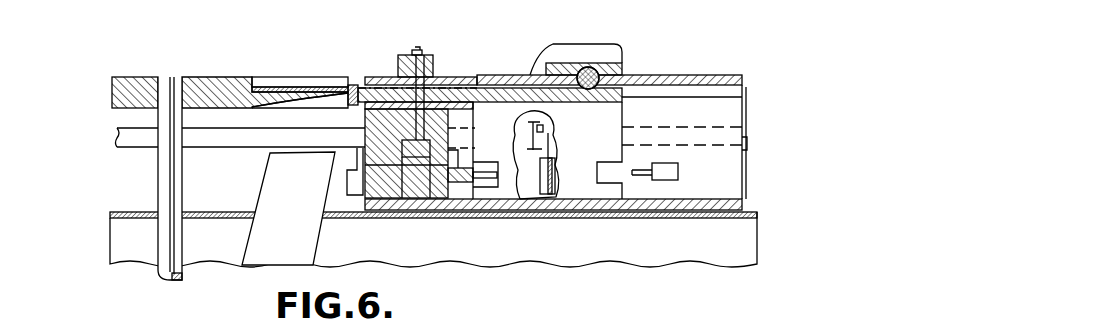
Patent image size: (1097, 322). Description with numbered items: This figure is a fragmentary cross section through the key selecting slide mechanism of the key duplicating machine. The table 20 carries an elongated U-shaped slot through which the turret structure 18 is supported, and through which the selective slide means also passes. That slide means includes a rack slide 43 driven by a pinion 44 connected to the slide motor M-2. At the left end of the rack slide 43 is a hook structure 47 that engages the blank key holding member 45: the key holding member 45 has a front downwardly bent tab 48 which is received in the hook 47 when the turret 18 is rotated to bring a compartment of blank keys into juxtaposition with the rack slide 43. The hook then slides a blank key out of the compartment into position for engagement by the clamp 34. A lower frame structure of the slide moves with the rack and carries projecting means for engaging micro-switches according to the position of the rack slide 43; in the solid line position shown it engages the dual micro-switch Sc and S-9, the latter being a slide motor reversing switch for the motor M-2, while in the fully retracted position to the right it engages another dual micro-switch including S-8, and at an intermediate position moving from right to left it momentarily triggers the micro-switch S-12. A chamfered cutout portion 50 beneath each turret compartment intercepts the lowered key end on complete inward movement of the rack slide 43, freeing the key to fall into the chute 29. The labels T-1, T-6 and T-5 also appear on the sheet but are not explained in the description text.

The turret structure 18 is at (196, 77).
The table 20 is at (147, 135).
The thermostat strip T-1 is at (265, 87).
The blank key holding member 45 is at (268, 108).
The chamfered cutout portion 50 is at (268, 108).
The front downwardly bent tab 48 is at (352, 90).
The hook structure 47 is at (352, 105).
The chute 29 is at (302, 241).
The clamp 34 is at (432, 60).
The rack slide 43 is at (450, 77).
The slide motor M-2 is at (580, 53).
The pinion 44 is at (623, 62).
The micro-switch S-8 is at (764, 112).
The slide motor reversing switch S-9 is at (680, 168).
The micro-switch Sc is at (463, 182).
The micro-switch S-12 is at (553, 194).
The thermostat T-6 is at (431, 315).
The thermostat T-5 is at (540, 315).